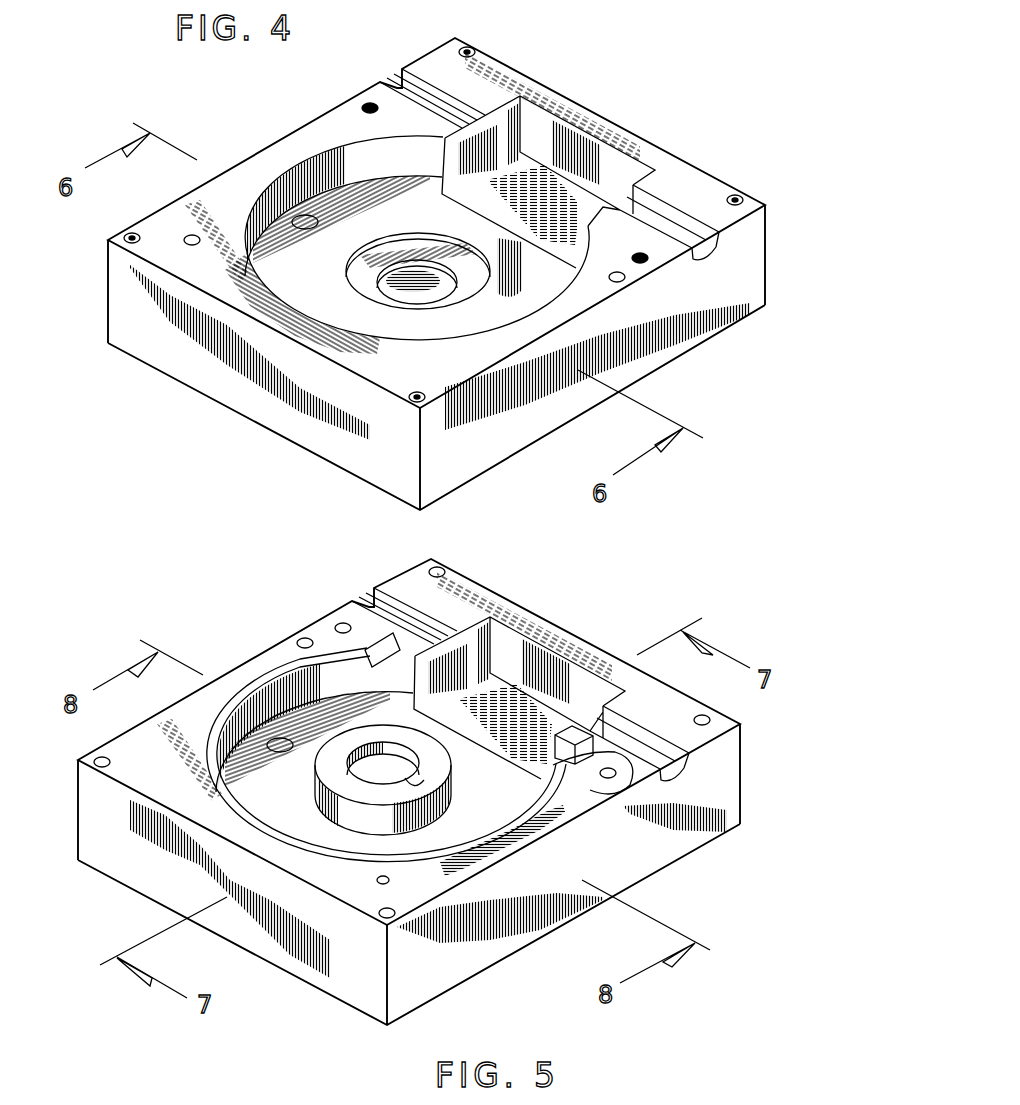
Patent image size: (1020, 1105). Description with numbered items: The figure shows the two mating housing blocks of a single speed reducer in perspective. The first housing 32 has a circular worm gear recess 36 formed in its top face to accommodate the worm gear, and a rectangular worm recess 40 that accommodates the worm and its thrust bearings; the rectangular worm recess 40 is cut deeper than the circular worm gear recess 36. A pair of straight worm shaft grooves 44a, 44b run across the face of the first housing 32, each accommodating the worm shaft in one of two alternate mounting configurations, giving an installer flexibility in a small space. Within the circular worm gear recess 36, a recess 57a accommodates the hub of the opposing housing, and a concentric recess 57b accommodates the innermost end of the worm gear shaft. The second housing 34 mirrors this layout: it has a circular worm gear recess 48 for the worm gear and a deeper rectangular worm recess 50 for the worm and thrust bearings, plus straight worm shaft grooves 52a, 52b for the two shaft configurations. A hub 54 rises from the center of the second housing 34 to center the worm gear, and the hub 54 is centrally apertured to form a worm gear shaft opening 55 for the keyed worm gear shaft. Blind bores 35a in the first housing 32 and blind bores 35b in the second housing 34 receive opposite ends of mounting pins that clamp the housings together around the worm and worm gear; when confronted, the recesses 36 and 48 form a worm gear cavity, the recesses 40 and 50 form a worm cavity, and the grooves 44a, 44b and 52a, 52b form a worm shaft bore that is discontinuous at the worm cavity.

In FIG. 4, the first housing 32 is at (767, 89).
In FIG. 5, the second housing 34 is at (661, 549).
In FIG. 4, the blind bores 35a is at (186, 238).
In FIG. 5, the blind bores 35b is at (340, 624).
In FIG. 4, the circular worm gear recess 36 is at (340, 184).
In FIG. 4, the rectangular worm recess 40 is at (583, 155).
In FIG. 4, the worm shaft groove 44a is at (394, 90).
In FIG. 4, the worm shaft groove 44b is at (735, 306).
In FIG. 5, the circular worm gear recess 48 is at (275, 703).
In FIG. 5, the rectangular worm recess 50 is at (513, 672).
In FIG. 5, the worm shaft groove 52a is at (372, 602).
In FIG. 5, the worm shaft groove 52b is at (672, 774).
In FIG. 5, the hub 54 is at (332, 777).
In FIG. 5, the worm gear shaft opening 55 is at (427, 781).
In FIG. 4, the recess 57a is at (360, 290).
In FIG. 4, the recess 57b is at (406, 298).